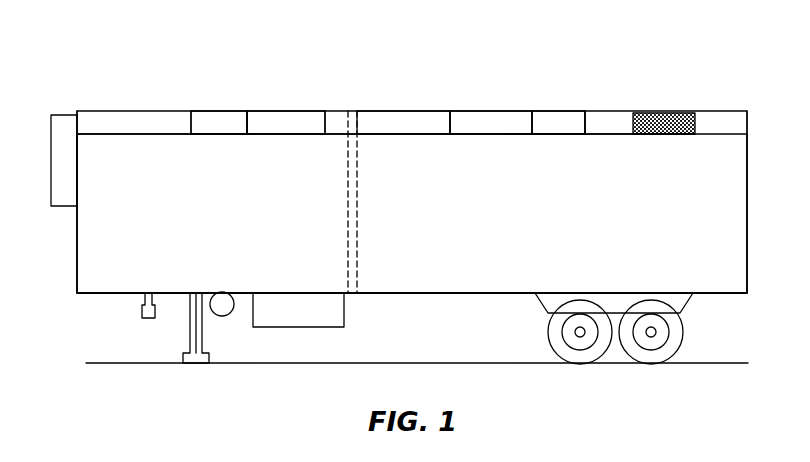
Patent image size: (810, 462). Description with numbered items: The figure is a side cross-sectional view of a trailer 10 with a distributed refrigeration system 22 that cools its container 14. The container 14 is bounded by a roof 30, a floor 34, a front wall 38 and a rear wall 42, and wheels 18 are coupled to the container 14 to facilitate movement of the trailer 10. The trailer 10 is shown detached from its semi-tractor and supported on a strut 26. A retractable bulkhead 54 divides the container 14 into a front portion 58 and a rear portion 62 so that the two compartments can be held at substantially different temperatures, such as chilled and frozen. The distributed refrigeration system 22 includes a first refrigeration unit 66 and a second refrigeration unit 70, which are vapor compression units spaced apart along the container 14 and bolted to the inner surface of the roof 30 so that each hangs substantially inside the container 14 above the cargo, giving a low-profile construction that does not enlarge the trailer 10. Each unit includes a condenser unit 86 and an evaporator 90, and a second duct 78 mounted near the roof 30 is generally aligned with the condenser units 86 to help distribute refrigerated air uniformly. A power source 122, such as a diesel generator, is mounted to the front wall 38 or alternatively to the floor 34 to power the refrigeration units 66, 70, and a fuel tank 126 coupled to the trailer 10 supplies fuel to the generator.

The trailer 10 is at (528, 57).
The container 14 is at (122, 106).
The wheels 18 is at (633, 350).
The distributed refrigeration system 22 is at (404, 152).
The strut 26 is at (187, 342).
The roof 30 is at (720, 111).
The floor 34 is at (718, 293).
The front wall 38 is at (77, 243).
The rear wall 42 is at (747, 226).
The bulkhead 54 is at (360, 224).
The front portion 58 is at (101, 278).
The rear portion 62 is at (458, 282).
The first refrigeration unit 66 is at (267, 140).
The second refrigeration unit 70 is at (567, 141).
The second duct 78 is at (393, 118).
The condenser unit 86 is at (302, 128).
The evaporator 90 is at (213, 128).
The power source 122 is at (57, 137).
The fuel tank 126 is at (222, 315).